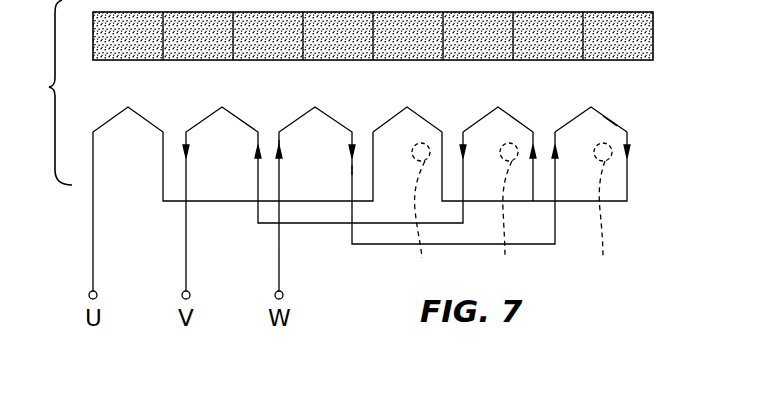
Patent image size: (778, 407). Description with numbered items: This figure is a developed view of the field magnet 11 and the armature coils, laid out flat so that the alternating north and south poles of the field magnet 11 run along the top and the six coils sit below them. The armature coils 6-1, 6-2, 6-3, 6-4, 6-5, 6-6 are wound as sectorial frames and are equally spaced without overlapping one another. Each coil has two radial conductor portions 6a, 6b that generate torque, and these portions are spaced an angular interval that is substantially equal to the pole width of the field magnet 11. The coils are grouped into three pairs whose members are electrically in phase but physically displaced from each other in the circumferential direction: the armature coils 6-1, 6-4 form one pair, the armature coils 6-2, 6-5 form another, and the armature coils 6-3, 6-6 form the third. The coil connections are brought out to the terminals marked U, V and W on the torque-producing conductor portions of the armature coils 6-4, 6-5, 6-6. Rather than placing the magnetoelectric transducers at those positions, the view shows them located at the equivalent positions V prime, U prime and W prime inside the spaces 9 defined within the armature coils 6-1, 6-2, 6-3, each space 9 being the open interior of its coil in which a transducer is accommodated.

The field magnet 11 is at (653, 30).
The armature coil 6-1 is at (613, 123).
The armature coil 6-2 is at (523, 124).
The armature coil 6-3 is at (432, 124).
The armature coil 6-4 is at (340, 124).
The armature coil 6-5 is at (246, 124).
The armature coil 6-6 is at (152, 125).
The radial conductor portion 6a is at (282, 143).
The radial conductor portion 6b is at (351, 170).
The space 9 is at (612, 133).